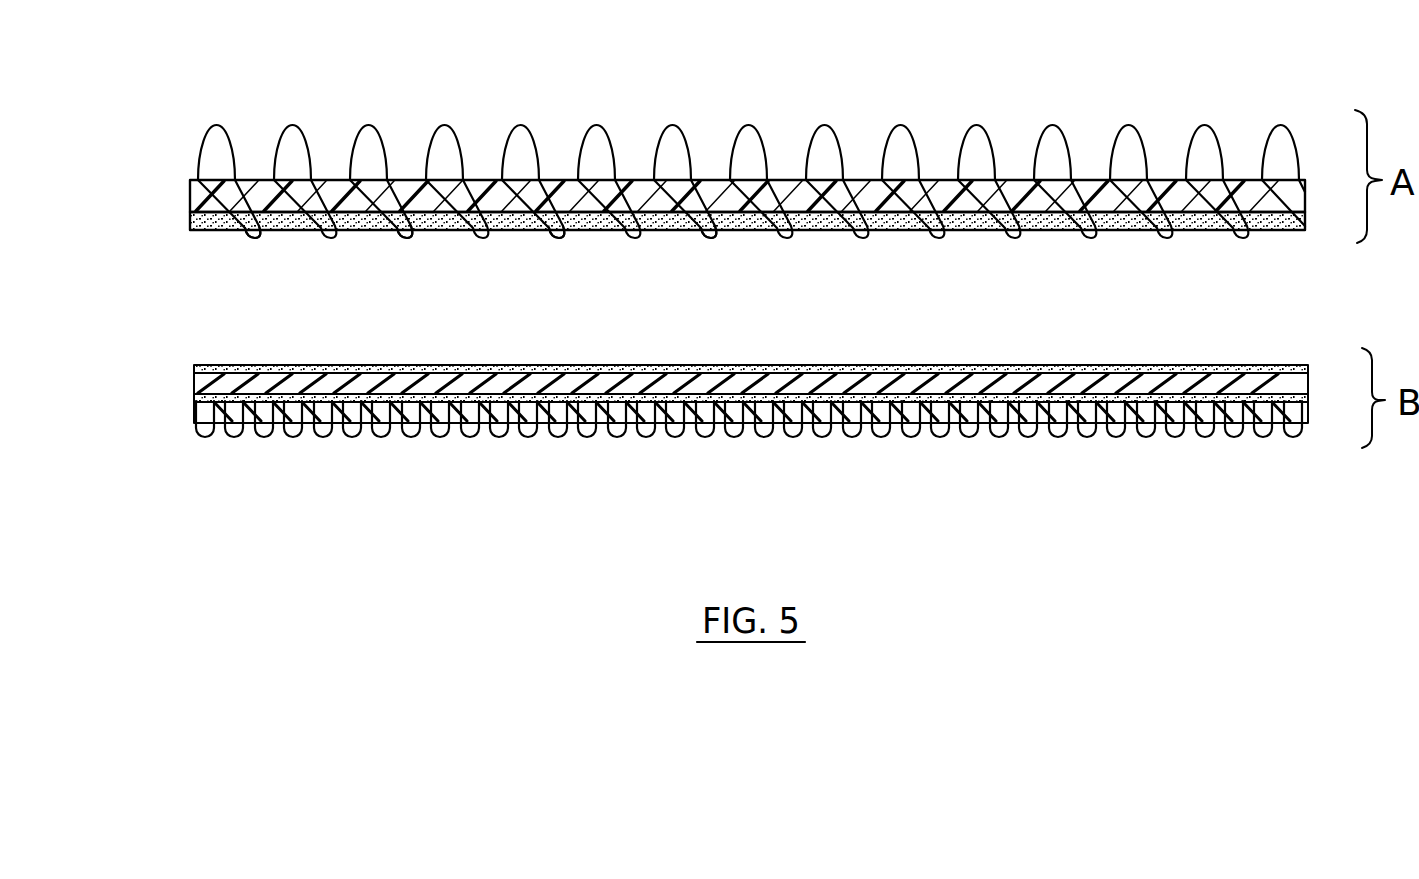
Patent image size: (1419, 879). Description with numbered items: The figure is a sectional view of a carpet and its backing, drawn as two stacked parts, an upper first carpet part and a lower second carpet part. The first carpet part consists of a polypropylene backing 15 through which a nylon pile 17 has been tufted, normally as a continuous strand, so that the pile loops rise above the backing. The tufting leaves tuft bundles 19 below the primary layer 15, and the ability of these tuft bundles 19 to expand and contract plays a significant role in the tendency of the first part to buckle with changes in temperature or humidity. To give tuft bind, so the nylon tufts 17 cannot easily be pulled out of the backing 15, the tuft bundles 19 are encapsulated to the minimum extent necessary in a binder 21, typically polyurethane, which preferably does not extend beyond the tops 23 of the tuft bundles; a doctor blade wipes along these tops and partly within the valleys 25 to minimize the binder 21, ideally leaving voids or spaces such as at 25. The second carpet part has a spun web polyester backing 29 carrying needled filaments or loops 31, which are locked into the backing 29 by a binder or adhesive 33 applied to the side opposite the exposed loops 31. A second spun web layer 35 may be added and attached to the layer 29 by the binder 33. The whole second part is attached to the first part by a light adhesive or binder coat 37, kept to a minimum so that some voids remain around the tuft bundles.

The polypropylene backing 15 is at (190, 190).
The nylon pile 17 is at (273, 142).
The tuft bundles 19 is at (255, 238).
The binder 21 is at (222, 228).
The tops of the tuft bundles 23 is at (712, 238).
The valleys 25 is at (592, 236).
The backing 29 is at (308, 412).
The needled filaments or loops 31 is at (520, 437).
The binder or adhesive 33 is at (196, 400).
The second spun web layer 35 is at (200, 383).
The adhesive or binder coat 37 is at (220, 366).